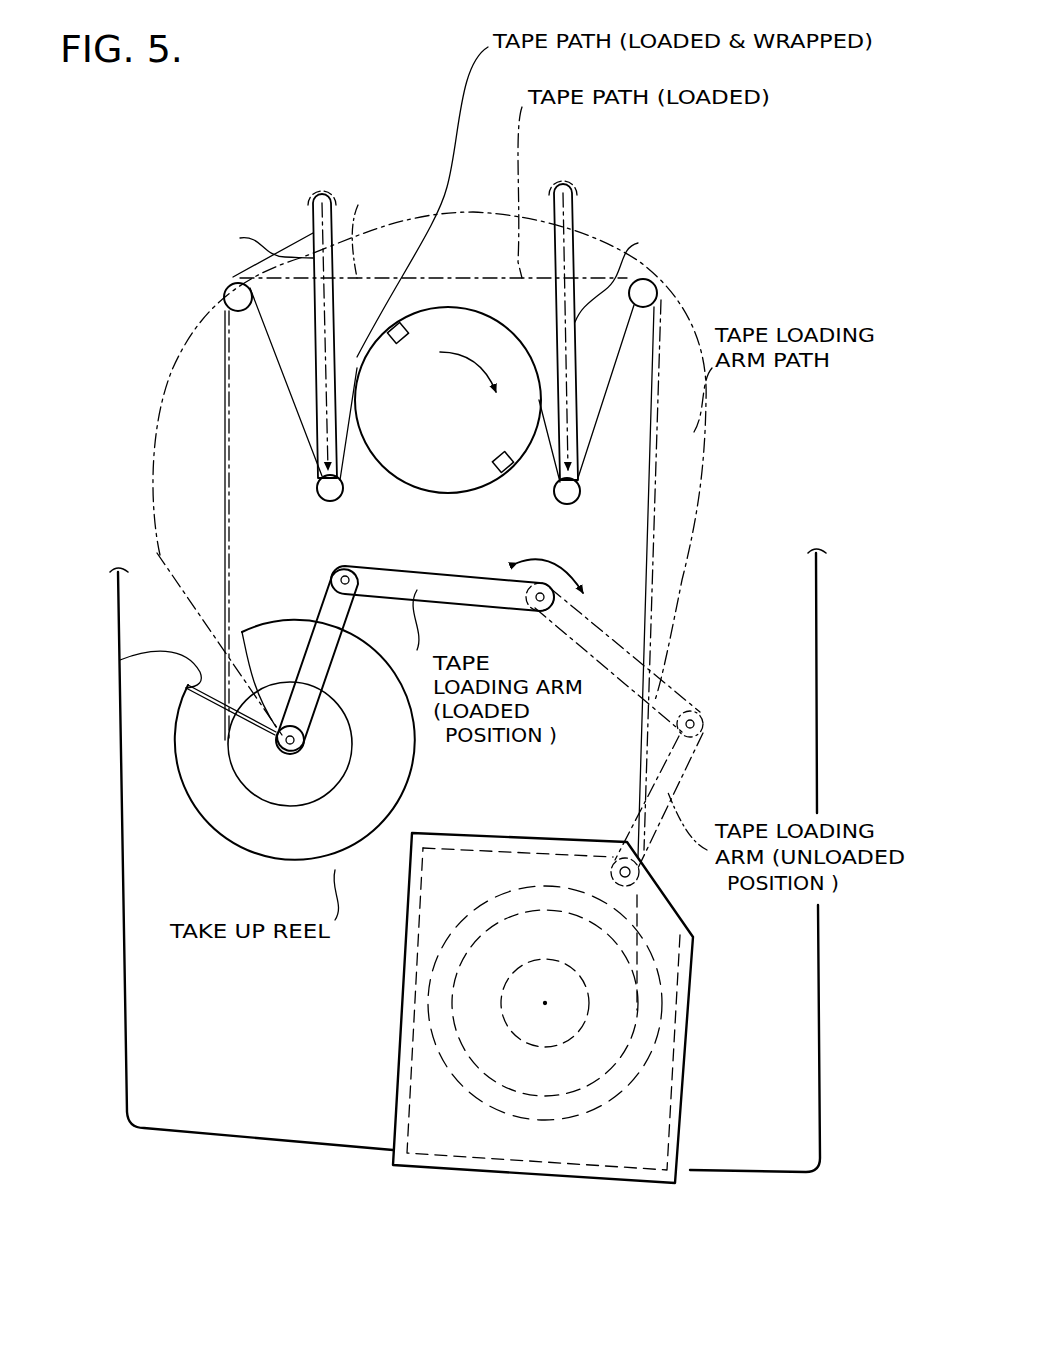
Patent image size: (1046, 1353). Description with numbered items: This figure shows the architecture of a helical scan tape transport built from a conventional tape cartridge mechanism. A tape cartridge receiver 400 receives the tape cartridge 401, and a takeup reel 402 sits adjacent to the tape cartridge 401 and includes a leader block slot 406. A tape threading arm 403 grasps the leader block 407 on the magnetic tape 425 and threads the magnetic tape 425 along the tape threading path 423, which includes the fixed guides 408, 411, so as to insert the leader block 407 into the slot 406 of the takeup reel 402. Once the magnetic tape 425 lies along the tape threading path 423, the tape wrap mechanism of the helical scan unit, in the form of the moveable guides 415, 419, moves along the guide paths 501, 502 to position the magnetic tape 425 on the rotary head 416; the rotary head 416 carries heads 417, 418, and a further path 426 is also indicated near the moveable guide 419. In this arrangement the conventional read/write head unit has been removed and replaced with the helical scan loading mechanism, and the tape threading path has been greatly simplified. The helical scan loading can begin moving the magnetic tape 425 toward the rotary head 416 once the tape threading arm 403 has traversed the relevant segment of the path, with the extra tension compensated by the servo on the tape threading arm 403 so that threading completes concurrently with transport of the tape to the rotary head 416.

The tape cartridge receiver 400 is at (405, 1160).
The tape cartridge 401 is at (540, 1145).
The takeup reel 402 is at (240, 835).
The tape threading arm 403 is at (397, 573).
The leader block slot 406 is at (120, 660).
The leader block 407 is at (276, 745).
The fixed guide 408 is at (648, 296).
The fixed guide 411 is at (236, 294).
The moveable guide 415 is at (575, 190).
The rotary head 416 is at (437, 490).
The magnetic head 417 is at (398, 342).
The magnetic head 418 is at (494, 460).
The moveable guide 419 is at (310, 530).
The tape threading path 423 is at (165, 388).
The magnetic tape 425 is at (225, 452).
The guide pin path 426 is at (380, 231).
The guide path 501 is at (251, 240).
The guide path 502 is at (631, 270).